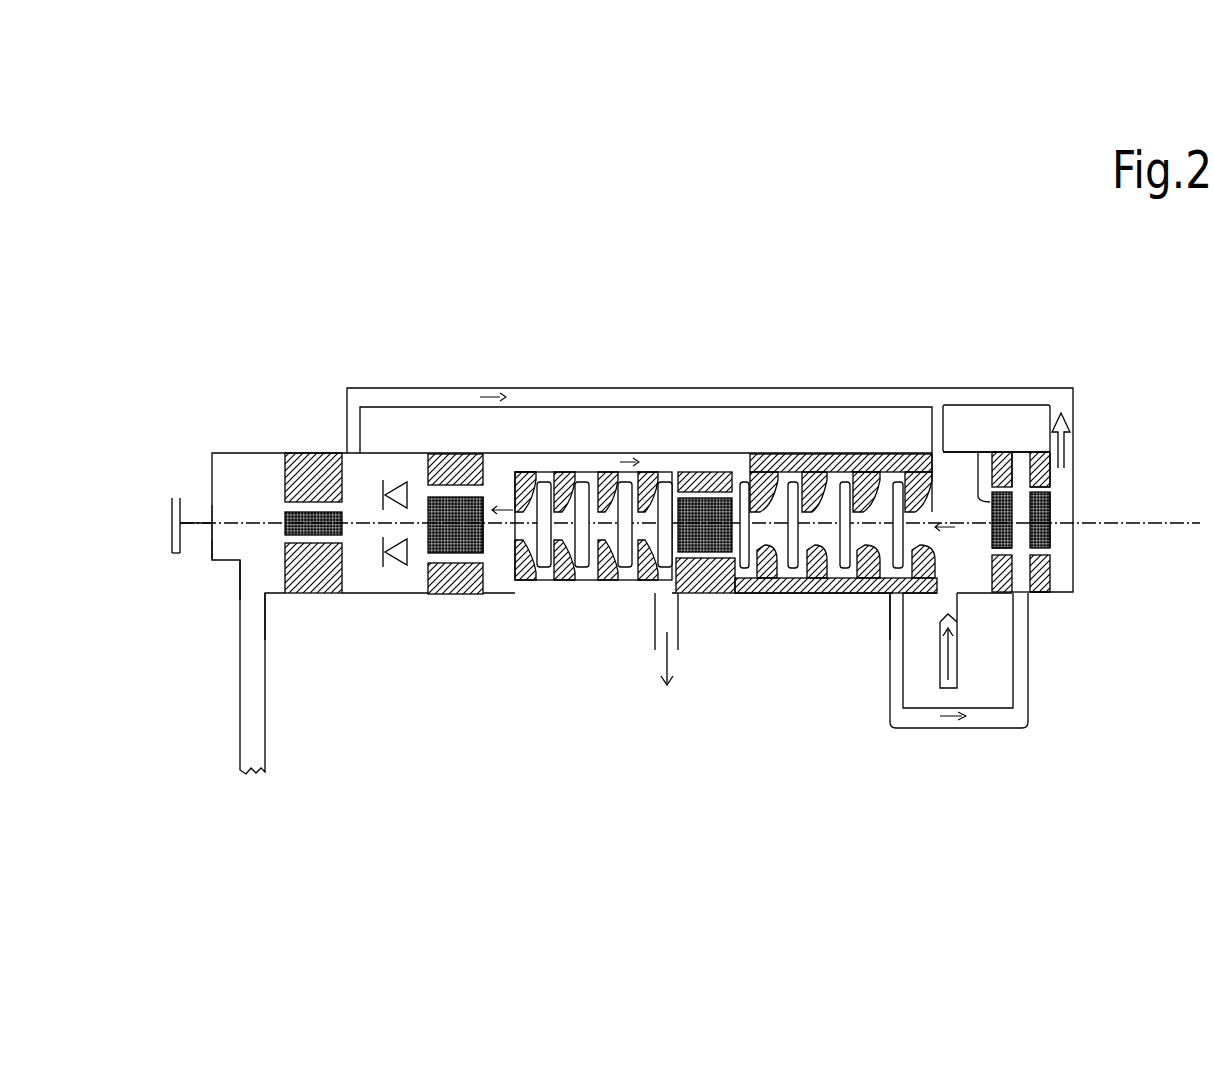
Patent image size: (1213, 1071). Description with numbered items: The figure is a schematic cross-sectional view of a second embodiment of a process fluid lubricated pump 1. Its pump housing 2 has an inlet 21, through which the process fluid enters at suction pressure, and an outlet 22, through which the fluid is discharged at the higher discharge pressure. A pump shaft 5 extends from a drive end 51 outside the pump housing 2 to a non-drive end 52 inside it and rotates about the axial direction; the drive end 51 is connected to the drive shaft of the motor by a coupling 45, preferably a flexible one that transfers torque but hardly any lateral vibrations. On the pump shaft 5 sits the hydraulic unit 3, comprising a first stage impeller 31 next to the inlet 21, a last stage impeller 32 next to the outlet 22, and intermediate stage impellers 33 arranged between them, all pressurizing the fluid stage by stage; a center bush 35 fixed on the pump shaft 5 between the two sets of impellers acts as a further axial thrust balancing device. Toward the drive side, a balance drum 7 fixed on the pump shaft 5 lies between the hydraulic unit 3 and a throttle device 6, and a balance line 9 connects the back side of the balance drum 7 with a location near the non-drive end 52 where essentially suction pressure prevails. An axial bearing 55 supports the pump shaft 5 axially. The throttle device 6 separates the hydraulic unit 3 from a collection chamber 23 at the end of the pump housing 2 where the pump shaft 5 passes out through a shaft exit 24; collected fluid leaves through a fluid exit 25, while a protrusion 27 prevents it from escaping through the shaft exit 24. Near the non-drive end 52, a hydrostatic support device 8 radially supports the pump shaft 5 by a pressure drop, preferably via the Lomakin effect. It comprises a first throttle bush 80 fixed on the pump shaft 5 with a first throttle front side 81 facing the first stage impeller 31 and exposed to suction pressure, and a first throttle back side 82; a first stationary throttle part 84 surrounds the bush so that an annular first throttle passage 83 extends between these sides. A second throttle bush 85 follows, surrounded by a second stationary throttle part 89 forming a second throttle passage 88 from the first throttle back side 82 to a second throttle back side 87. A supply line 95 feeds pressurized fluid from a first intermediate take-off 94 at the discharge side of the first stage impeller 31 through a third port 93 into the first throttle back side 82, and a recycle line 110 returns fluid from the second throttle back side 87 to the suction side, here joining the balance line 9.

The process fluid lubricated pump 1 is at (746, 232).
The pump housing 2 is at (214, 447).
The hydraulic unit 3 is at (786, 602).
The pump shaft 5 is at (347, 528).
The throttle device 6 is at (304, 449).
The balance drum 7 is at (484, 496).
The hydrostatic support device 8 is at (1000, 430).
The balance line 9 is at (621, 386).
The inlet 21 is at (960, 614).
The outlet 22 is at (681, 609).
The collection chamber 23 is at (210, 561).
The shaft exit 24 is at (207, 521).
The fluid exit 25 is at (252, 597).
The protrusion 27 is at (239, 563).
The first stage impeller 31 is at (890, 468).
The last stage impeller 32 is at (656, 601).
The intermediate stage impeller 33 is at (545, 582).
The center bush 35 is at (712, 475).
The coupling 45 is at (168, 500).
The drive end 51 is at (183, 556).
The non-drive end 52 is at (1051, 525).
The axial bearing 55 is at (393, 546).
The first throttle bush 80 is at (976, 468).
The first throttle front side 81 is at (972, 478).
The first throttle back side 82 is at (1018, 480).
The first throttle passage 83 is at (988, 553).
The first stationary throttle part 84 is at (1010, 475).
The second throttle bush 85 is at (1052, 512).
The second throttle back side 87 is at (1060, 474).
The second throttle passage 88 is at (1046, 489).
The second stationary throttle part 89 is at (1043, 595).
The third port 93 is at (1031, 595).
The first intermediate take-off 94 is at (889, 603).
The supply line 95 is at (996, 730).
The recycle line 110 is at (1078, 387).